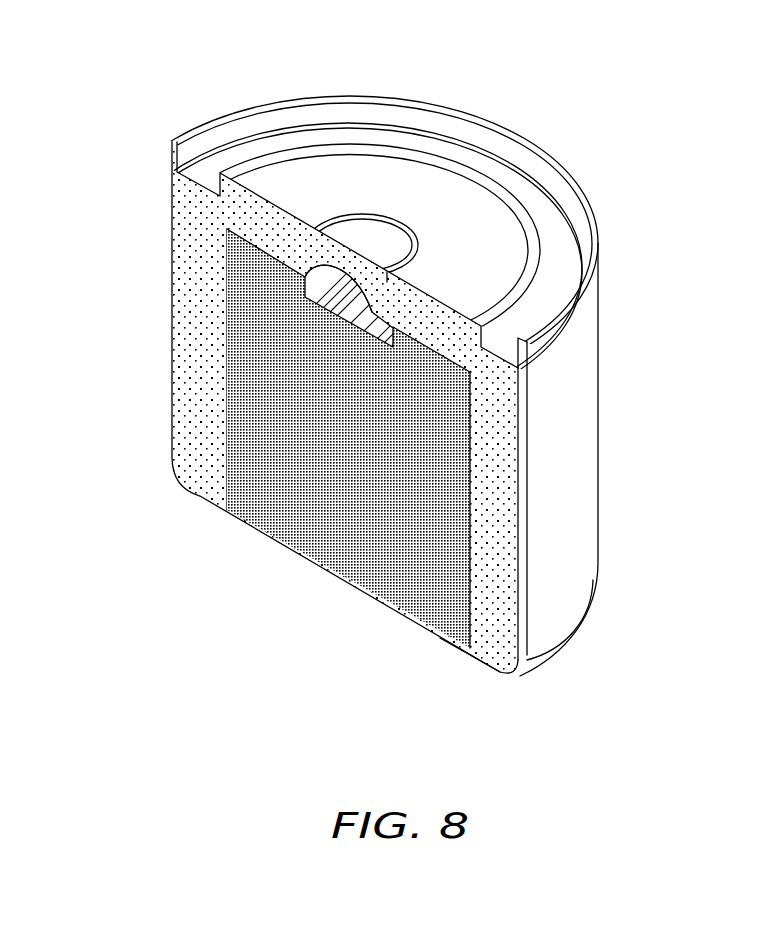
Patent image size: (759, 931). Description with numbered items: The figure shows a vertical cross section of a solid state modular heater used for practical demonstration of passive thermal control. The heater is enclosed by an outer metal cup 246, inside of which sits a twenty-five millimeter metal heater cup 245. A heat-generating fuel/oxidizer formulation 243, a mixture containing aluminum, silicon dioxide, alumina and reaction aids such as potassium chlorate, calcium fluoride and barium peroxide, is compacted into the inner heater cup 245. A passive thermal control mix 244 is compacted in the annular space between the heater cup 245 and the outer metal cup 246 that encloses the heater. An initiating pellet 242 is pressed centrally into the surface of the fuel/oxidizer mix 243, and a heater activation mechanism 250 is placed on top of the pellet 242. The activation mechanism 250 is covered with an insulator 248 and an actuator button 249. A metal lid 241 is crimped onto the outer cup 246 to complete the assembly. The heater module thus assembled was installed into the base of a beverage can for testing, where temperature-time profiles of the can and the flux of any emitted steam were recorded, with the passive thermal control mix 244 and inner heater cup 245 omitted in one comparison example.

The metal lid 241 is at (555, 243).
The initiating pellet 242 is at (333, 303).
The heat-generating fuel/oxidizer formulation 243 is at (360, 533).
The passive thermal control mix 244 is at (493, 643).
The metal heater cup 245 is at (472, 535).
The outer metal cup 246 is at (553, 512).
The insulator 248 is at (248, 206).
The actuator button 249 is at (318, 180).
The heater activation mechanism 250 is at (340, 281).